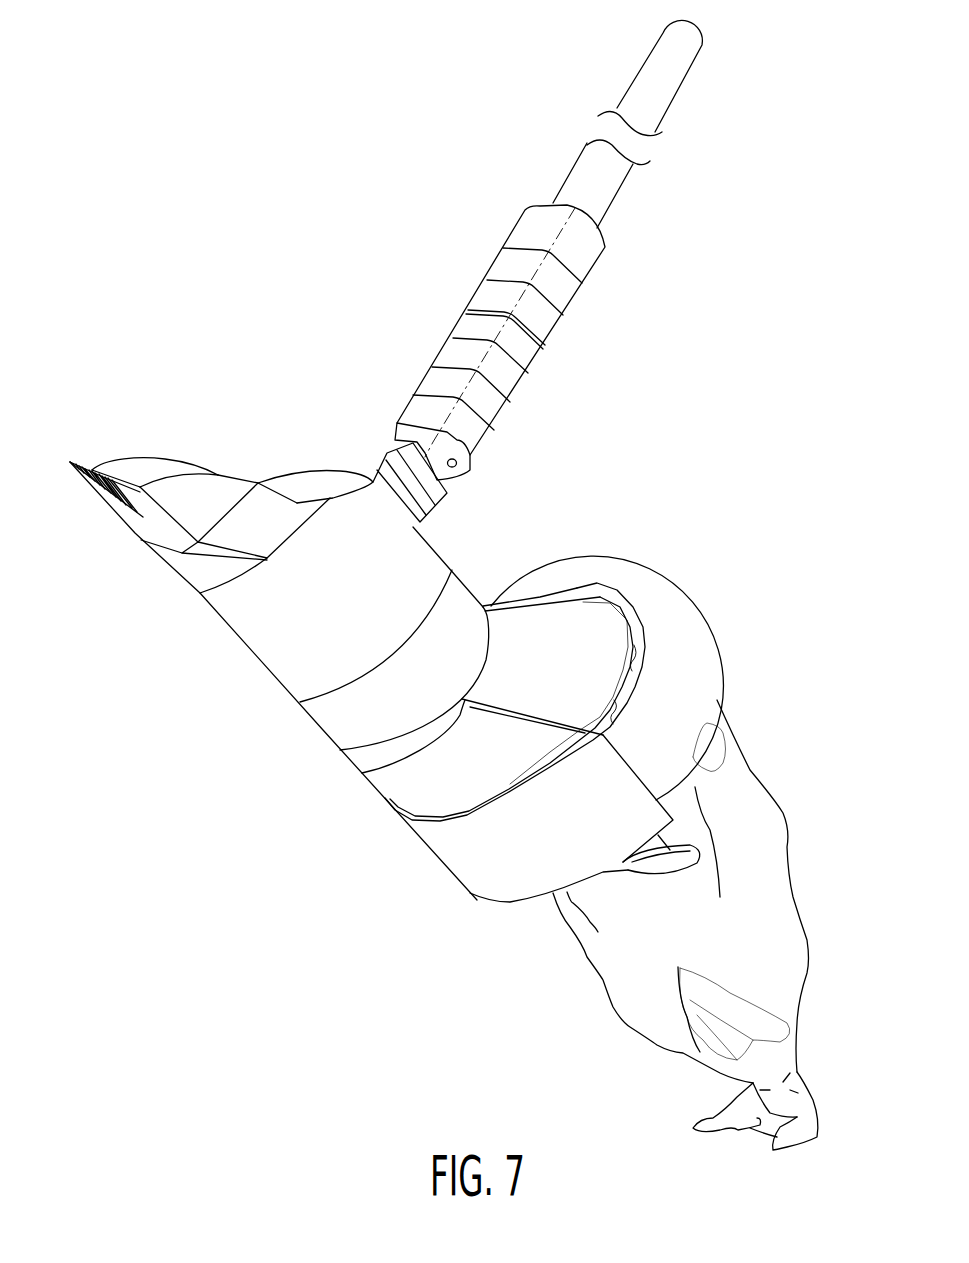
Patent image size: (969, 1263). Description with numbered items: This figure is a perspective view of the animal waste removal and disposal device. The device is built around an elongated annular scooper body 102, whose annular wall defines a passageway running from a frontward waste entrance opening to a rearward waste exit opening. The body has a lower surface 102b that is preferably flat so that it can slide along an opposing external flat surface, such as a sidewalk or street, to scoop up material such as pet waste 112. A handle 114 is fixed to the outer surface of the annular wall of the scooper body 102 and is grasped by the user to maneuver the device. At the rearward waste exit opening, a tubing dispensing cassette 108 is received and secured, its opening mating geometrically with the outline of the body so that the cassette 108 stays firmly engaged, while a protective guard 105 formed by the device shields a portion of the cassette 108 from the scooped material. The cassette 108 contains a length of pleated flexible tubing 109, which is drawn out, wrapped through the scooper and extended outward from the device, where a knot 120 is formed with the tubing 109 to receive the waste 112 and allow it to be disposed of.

The scooper body 102 is at (427, 540).
The lower surface 102b is at (323, 737).
The protective guard 105 is at (467, 873).
The tubing dispensing cassette 108 is at (697, 636).
The pleated tubing 109 is at (599, 592).
The waste 112 is at (753, 1010).
The handle 114 is at (523, 237).
The knot 120 is at (790, 1080).